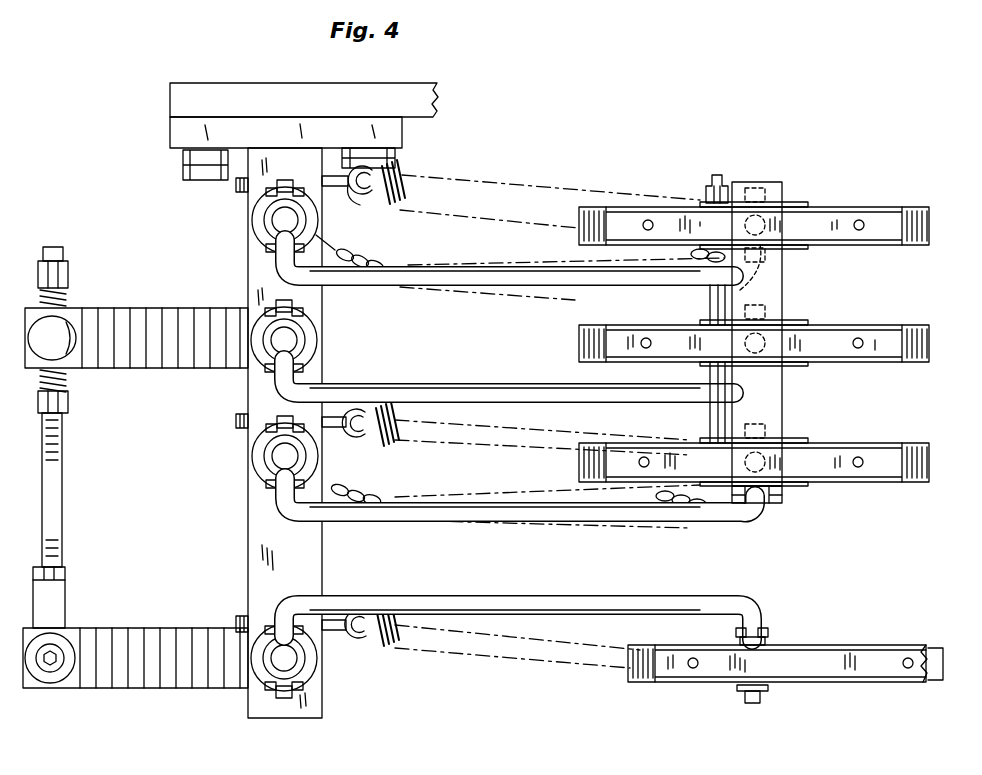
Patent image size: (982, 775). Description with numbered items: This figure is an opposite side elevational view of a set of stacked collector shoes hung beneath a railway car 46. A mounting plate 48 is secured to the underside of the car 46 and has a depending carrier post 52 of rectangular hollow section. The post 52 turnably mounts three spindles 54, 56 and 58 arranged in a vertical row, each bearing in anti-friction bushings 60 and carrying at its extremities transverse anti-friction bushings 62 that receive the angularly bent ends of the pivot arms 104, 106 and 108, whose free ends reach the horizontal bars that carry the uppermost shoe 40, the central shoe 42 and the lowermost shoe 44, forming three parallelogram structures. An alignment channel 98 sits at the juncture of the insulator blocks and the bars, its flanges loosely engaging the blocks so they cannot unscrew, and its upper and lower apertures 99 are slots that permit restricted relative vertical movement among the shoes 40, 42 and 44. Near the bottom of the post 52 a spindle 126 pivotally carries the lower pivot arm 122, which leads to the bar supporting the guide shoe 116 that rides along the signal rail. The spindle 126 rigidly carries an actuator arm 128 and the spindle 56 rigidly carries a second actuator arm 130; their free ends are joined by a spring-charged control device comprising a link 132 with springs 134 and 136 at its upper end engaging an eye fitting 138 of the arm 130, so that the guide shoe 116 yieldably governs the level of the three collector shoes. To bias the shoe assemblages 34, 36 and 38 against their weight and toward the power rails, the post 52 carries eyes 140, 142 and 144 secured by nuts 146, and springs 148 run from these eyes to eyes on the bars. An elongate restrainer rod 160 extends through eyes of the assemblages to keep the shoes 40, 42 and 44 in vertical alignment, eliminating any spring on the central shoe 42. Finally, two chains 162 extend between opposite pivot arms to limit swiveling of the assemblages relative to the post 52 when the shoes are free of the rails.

The shoe assemblage 34 is at (754, 194).
The shoe assemblage 36 is at (754, 332).
The shoe assemblage 38 is at (754, 490).
The uppermost shoe 40 is at (880, 208).
The central shoe 42 is at (876, 358).
The lowermost shoe 44 is at (876, 472).
The railway car 46 is at (232, 86).
The mounting plate 48 is at (170, 134).
The carrier post 52 is at (250, 521).
The spindle 54 is at (262, 219).
The spindle 56 is at (262, 348).
The spindle 58 is at (262, 461).
The anti-friction bushing 60 is at (318, 224).
The transverse anti-friction bushing 62 is at (272, 240).
The alignment channel 98 is at (783, 404).
The slotted aperture 99 is at (755, 185).
The pivot arm 104 is at (498, 266).
The pivot arm 106 is at (545, 380).
The pivot arm 108 is at (525, 505).
The guide shoe 116 is at (880, 683).
The lower pivot arm 122 is at (525, 600).
The spindle 126 is at (300, 668).
The actuator arm 128 is at (135, 690).
The actuator arm 130 is at (180, 310).
The link 132 is at (62, 502).
The spring 134 is at (68, 290).
The spring 136 is at (70, 380).
The eye fitting 138 is at (72, 330).
The eye 140 is at (368, 196).
The eye 142 is at (350, 410).
The eye 144 is at (334, 622).
The nut 146 is at (240, 192).
The spring 148 is at (402, 180).
The restrainer rod 160 is at (710, 373).
The chain 162 is at (368, 262).